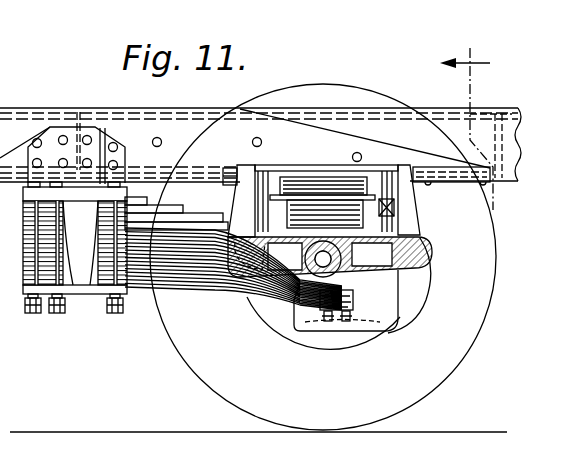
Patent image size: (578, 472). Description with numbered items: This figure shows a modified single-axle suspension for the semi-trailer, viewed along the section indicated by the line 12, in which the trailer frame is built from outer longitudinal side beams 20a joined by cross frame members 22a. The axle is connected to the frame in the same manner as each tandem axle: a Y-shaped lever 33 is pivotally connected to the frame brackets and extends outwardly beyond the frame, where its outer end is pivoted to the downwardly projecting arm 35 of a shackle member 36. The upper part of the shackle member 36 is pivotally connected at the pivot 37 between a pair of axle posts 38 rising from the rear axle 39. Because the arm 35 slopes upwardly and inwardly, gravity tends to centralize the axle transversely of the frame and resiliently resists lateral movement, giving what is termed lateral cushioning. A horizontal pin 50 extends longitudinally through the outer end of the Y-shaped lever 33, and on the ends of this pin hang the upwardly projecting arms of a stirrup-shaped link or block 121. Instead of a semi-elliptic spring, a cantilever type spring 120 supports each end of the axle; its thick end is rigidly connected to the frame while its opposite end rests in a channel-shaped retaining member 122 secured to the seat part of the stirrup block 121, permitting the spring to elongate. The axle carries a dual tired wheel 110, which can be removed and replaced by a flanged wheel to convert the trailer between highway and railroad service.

The section line 12- 12 is at (521, 210).
The outer longitudinal side beam 20a is at (54, 97).
The cross frame member 22a is at (505, 140).
The Y-shaped lever 33 is at (327, 200).
The downwardly projecting arm 35 is at (268, 188).
The shackle member 36 is at (318, 175).
The pivot 37 is at (421, 168).
The axle post 38 is at (410, 230).
The rear axle 39 is at (398, 276).
The horizontal pin 50 is at (395, 223).
The dual tired wheel 110 is at (200, 391).
The cantilever type spring 120 is at (181, 291).
The stirrup-shaped link or block 121 is at (384, 320).
The channel-shaped retaining member 122 is at (355, 292).